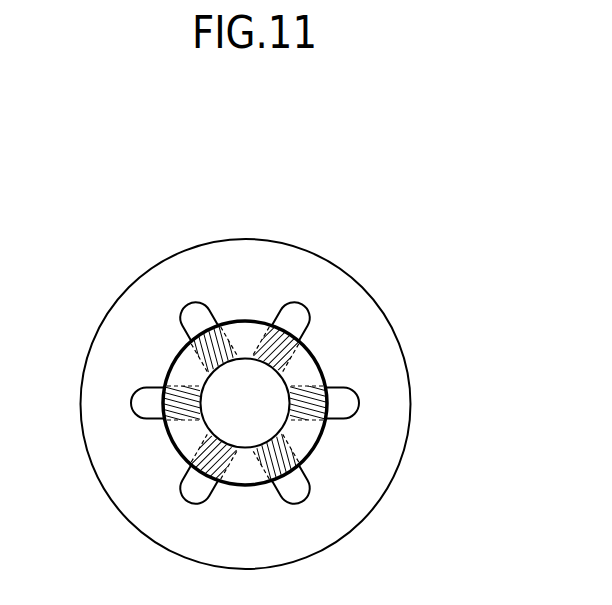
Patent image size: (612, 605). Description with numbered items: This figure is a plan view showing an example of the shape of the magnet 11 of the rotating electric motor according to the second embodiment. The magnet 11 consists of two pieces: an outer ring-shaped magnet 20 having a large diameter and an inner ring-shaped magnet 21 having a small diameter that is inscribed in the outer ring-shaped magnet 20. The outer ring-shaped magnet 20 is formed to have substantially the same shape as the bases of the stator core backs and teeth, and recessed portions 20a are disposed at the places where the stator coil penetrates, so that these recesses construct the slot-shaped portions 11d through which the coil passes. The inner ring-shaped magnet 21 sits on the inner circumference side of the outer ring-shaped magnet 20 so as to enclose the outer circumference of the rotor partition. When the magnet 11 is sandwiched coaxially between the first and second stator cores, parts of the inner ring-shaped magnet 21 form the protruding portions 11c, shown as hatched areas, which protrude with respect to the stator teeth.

The magnet 11 is at (218, 176).
The outer ring-shaped magnet 20 is at (257, 237).
The inner ring-shaped magnet 21 is at (247, 327).
The slot-shaped portion 11d is at (297, 364).
The recessed portion 20a is at (297, 331).
The protruding portion 11c is at (278, 352).